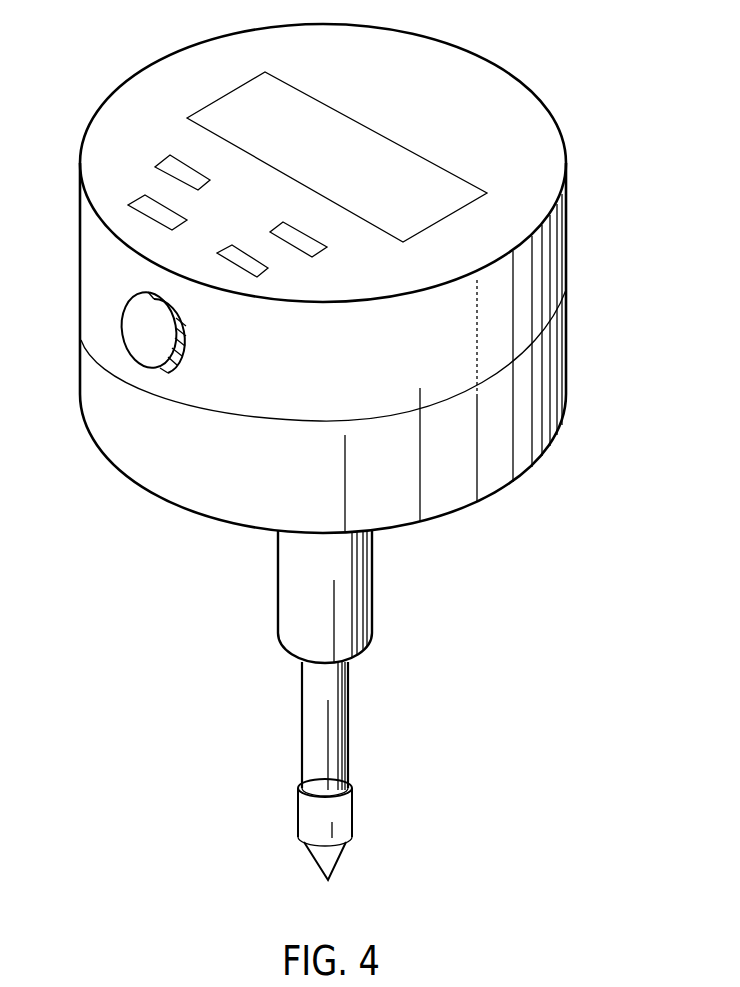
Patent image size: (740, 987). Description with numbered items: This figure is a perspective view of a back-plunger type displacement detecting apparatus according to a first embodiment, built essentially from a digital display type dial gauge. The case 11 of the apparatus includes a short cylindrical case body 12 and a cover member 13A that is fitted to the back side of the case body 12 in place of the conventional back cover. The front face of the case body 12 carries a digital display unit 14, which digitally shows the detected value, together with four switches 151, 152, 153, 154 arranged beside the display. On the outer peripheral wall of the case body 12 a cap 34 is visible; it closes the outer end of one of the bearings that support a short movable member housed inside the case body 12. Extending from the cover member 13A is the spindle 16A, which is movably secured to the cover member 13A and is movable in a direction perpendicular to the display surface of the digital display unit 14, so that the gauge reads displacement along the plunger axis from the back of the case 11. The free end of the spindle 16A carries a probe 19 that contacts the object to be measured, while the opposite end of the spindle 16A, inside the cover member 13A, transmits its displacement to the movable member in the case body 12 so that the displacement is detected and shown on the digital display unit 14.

The case 11 is at (667, 263).
The case body 12 is at (565, 261).
The cover member 13A is at (565, 353).
The digital display unit 14 is at (218, 93).
The switch 151 is at (128, 206).
The switch 152 is at (260, 275).
The switch 153 is at (155, 168).
The switch 154 is at (315, 256).
The cap 34 is at (136, 332).
The spindle 16A is at (350, 738).
The probe 19 is at (328, 880).